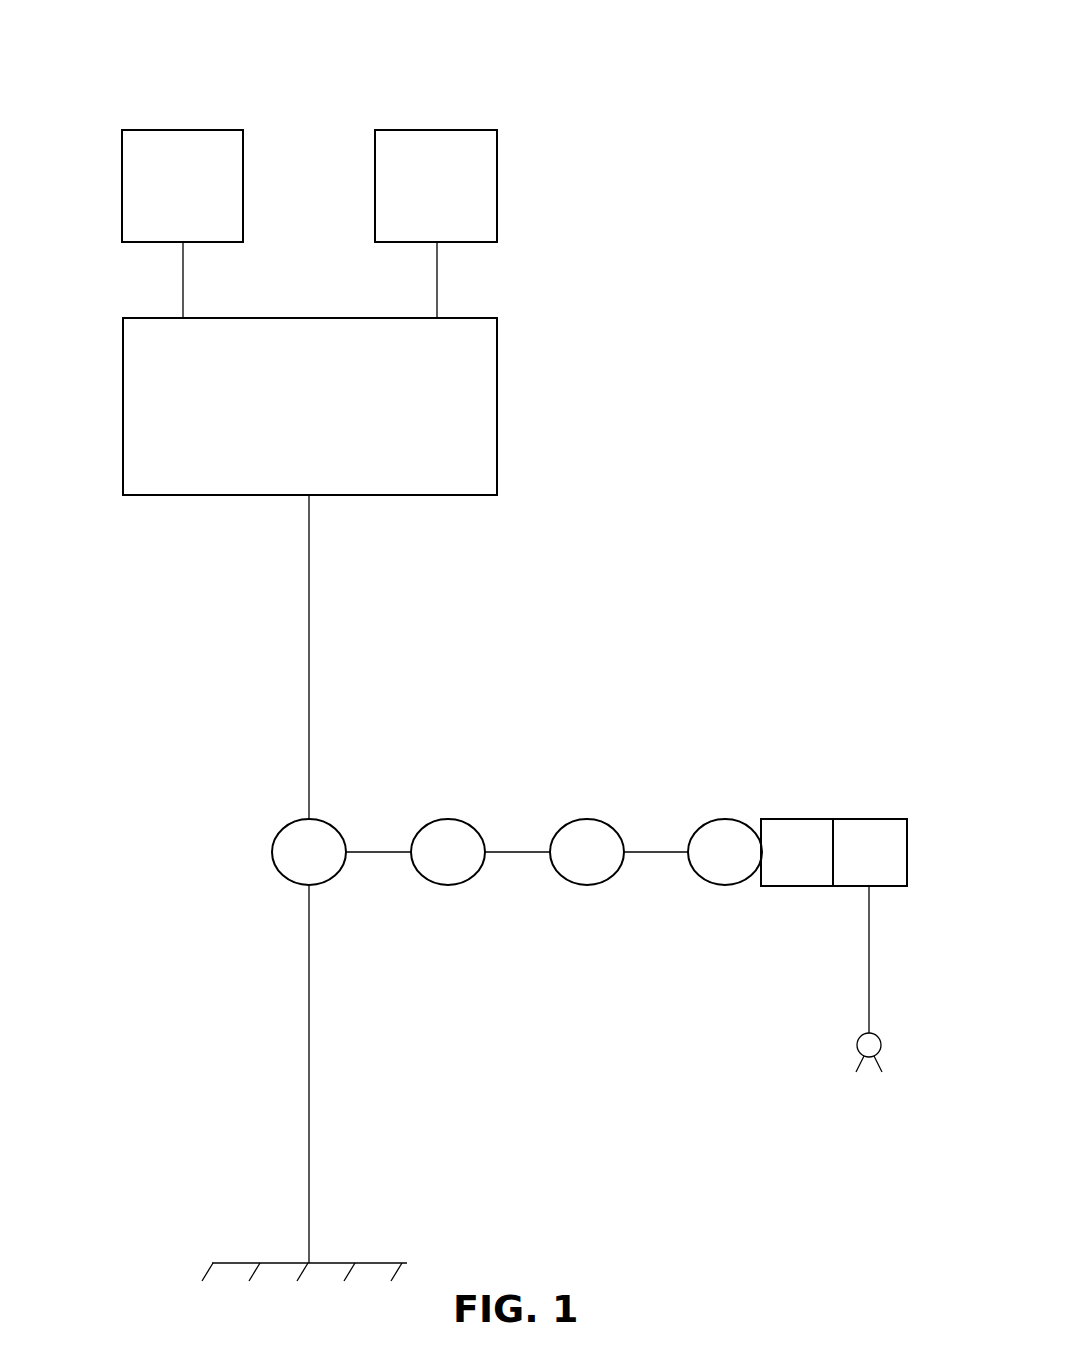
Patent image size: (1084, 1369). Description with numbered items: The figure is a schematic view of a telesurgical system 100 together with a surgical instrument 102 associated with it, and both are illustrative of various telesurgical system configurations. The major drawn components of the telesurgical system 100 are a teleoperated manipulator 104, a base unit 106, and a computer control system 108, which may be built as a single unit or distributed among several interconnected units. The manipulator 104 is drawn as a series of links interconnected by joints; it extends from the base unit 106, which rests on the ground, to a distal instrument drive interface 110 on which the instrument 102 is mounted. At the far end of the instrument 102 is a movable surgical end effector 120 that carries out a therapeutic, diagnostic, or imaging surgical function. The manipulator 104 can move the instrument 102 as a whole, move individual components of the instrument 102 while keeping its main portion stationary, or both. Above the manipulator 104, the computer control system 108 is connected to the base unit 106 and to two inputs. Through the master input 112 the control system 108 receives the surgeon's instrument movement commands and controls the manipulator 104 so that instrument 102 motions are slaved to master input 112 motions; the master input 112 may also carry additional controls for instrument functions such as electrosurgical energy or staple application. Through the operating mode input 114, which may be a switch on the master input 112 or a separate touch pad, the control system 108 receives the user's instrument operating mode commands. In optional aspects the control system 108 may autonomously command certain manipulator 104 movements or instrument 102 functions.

The telesurgical system 100 is at (230, 72).
The surgical instrument 102 is at (870, 818).
The teleoperated manipulator 104 is at (562, 727).
The base unit 106 is at (308, 1073).
The computer control system 108 is at (121, 405).
The distal instrument drive interface 110 is at (797, 818).
The master input 112 is at (121, 185).
The operating mode input 114 is at (498, 185).
The movable surgical end effector 120 is at (881, 1047).